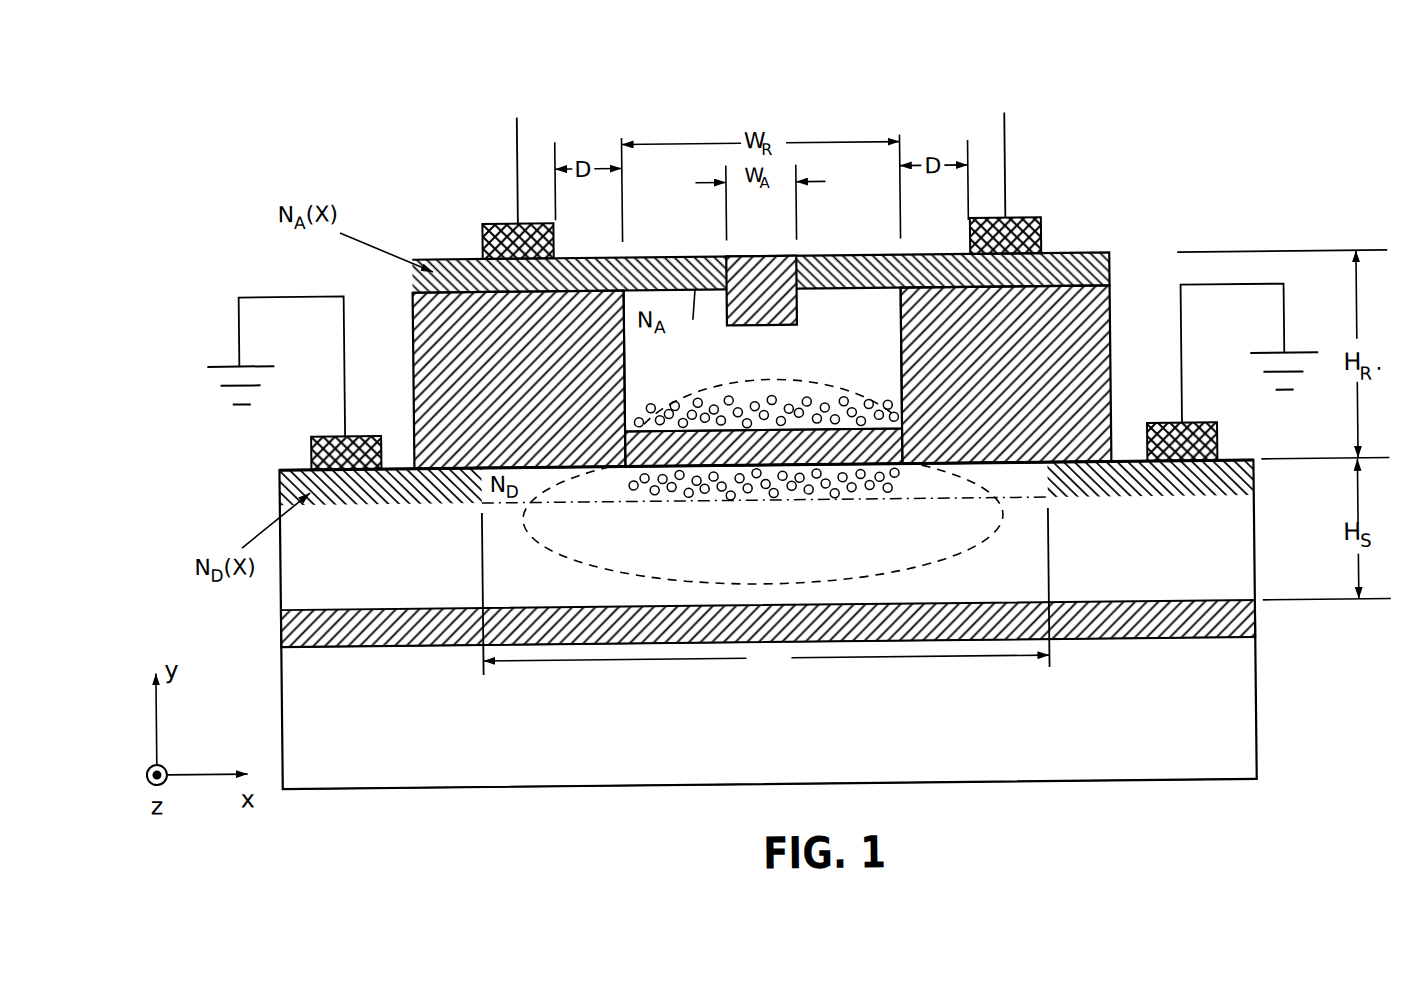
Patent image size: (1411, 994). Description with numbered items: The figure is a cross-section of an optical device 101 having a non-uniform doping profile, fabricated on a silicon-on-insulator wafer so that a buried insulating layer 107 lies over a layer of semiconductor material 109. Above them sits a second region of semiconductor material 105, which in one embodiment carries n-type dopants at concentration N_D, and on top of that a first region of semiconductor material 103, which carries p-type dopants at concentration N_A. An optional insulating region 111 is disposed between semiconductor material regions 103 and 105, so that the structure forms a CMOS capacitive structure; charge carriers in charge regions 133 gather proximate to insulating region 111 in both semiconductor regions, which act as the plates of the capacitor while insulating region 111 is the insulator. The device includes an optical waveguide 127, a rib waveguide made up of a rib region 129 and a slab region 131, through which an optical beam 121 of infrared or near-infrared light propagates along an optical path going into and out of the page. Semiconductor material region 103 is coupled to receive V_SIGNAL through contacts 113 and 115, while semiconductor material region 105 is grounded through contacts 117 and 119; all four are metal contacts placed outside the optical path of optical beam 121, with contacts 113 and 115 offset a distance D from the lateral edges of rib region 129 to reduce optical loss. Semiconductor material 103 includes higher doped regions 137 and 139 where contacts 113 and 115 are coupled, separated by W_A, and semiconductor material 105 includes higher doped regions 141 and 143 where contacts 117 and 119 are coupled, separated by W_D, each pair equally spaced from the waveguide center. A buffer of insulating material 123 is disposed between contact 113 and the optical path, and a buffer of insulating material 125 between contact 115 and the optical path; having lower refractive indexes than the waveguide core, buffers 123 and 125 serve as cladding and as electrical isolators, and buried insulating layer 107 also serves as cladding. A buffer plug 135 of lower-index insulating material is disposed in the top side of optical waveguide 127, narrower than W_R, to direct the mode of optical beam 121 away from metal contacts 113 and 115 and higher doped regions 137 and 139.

The optical device 101 is at (1169, 107).
The first region of semiconductor material 103 is at (671, 254).
The second region of semiconductor material 105 is at (1242, 535).
The buried insulating layer 107 is at (1241, 615).
The layer of semiconductor material 109 is at (1240, 693).
The insulating region 111 is at (640, 469).
The contact 113 is at (486, 238).
The contact 115 is at (1045, 225).
The contact 117 is at (312, 450).
The contact 119 is at (1218, 442).
The optical beam 121 is at (1008, 508).
The buffer of insulating material 123 is at (414, 334).
The buffer of insulating material 125 is at (1142, 320).
The optical waveguide 127 is at (838, 321).
The rib region 129 is at (868, 368).
The slab region 131 is at (1148, 585).
The charge regions 133 is at (721, 402).
The buffer plug 135 is at (770, 257).
The higher doped region 137 is at (415, 274).
The higher doped region 139 is at (1115, 262).
The higher doped region 141 is at (279, 487).
The higher doped region 143 is at (1245, 478).